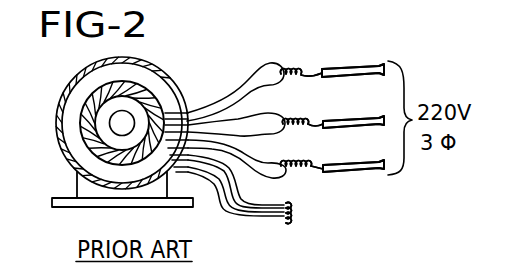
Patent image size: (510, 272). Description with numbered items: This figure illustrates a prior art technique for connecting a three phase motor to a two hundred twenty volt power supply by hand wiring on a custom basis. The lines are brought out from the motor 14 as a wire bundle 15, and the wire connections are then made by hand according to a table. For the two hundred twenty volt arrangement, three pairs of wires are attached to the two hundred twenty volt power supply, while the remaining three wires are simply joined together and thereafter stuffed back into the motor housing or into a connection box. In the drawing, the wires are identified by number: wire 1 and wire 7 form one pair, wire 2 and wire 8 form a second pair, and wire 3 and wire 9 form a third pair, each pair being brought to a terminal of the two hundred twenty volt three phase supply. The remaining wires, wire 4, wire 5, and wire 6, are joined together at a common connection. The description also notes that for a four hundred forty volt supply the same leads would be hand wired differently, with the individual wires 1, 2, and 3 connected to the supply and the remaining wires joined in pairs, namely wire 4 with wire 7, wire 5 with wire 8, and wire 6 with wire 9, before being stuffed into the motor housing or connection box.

The wire 1 is at (316, 44).
The wire 7 is at (316, 44).
The wire 2 is at (290, 97).
The wire 8 is at (290, 97).
The wire 3 is at (296, 150).
The wire 9 is at (296, 150).
The wire 4 is at (323, 196).
The wire 5 is at (323, 196).
The wire 6 is at (323, 196).
The motor 14 is at (166, 60).
The wire bundle 15 is at (208, 97).